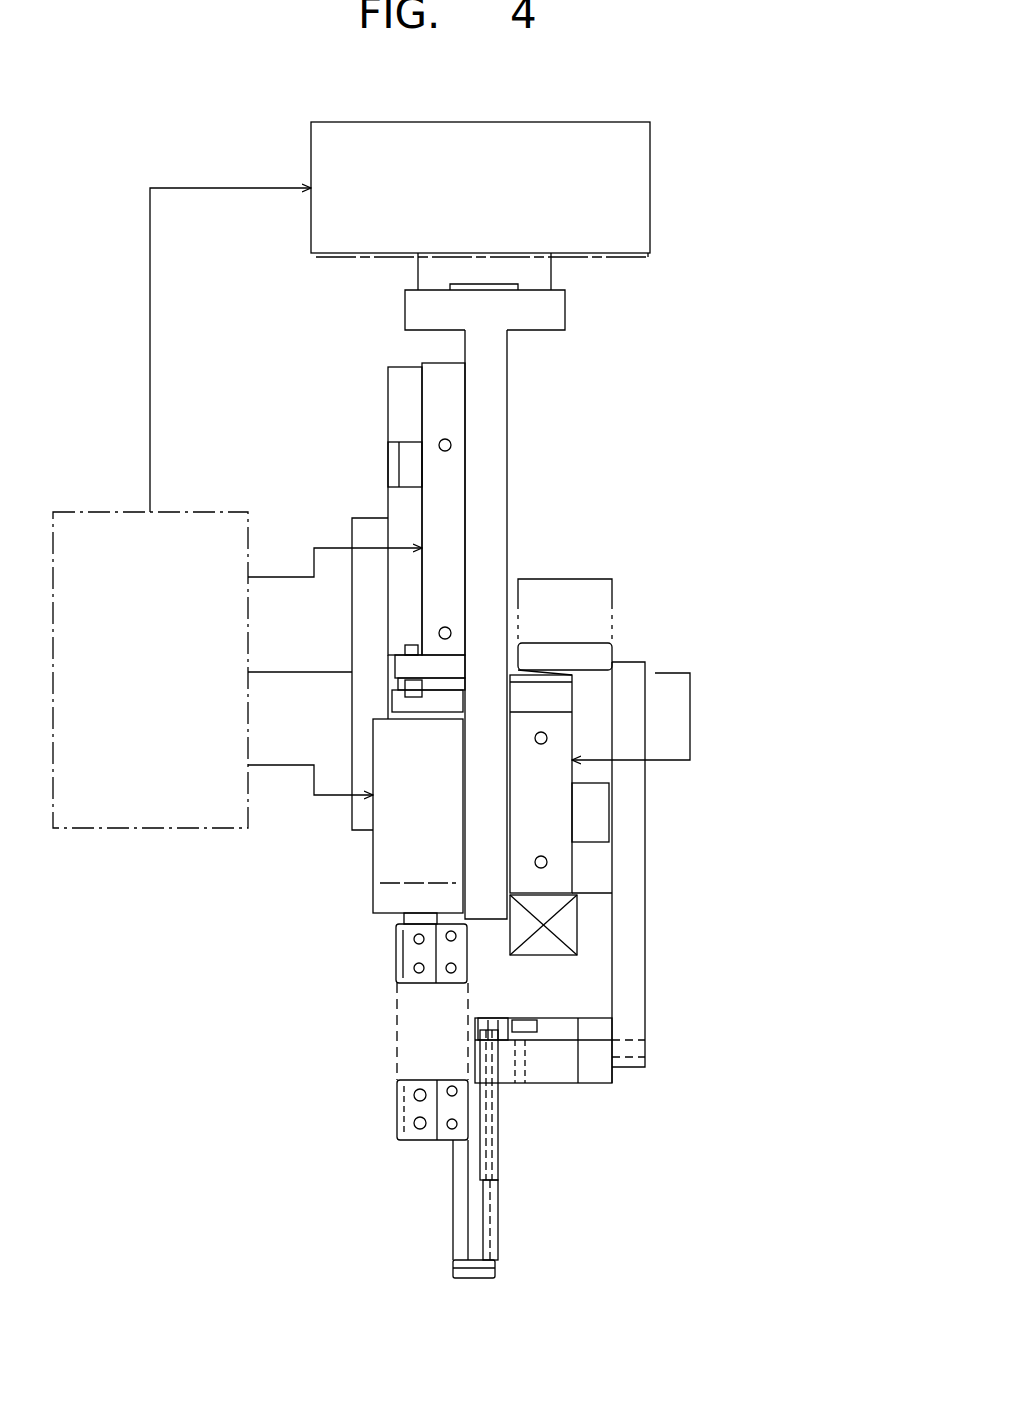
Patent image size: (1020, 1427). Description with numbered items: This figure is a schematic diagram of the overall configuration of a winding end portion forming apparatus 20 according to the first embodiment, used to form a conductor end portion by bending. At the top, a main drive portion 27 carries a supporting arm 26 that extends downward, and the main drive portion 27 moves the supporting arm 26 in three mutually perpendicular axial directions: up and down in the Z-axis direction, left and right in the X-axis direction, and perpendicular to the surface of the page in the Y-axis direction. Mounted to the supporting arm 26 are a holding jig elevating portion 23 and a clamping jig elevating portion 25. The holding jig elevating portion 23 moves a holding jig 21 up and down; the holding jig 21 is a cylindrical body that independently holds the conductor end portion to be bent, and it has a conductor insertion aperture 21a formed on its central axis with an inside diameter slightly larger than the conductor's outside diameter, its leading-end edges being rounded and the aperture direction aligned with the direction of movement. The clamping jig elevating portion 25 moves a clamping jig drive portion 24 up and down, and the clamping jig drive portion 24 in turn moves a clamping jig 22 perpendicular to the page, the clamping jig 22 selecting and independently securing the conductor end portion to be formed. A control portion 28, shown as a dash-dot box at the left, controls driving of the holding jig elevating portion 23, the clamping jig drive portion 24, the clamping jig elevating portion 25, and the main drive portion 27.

The winding end portion forming apparatus 20 is at (131, 110).
The holding jig 21 is at (500, 1130).
The conductor insertion aperture 21a is at (490, 1210).
The clamping jig 22 is at (442, 1193).
The holding jig elevating portion 23 is at (565, 812).
The clamping jig drive portion 24 is at (385, 862).
The clamping jig elevating portion 25 is at (435, 415).
The supporting arm 26 is at (513, 417).
The main drive portion 27 is at (660, 191).
The control portion 28 is at (100, 505).